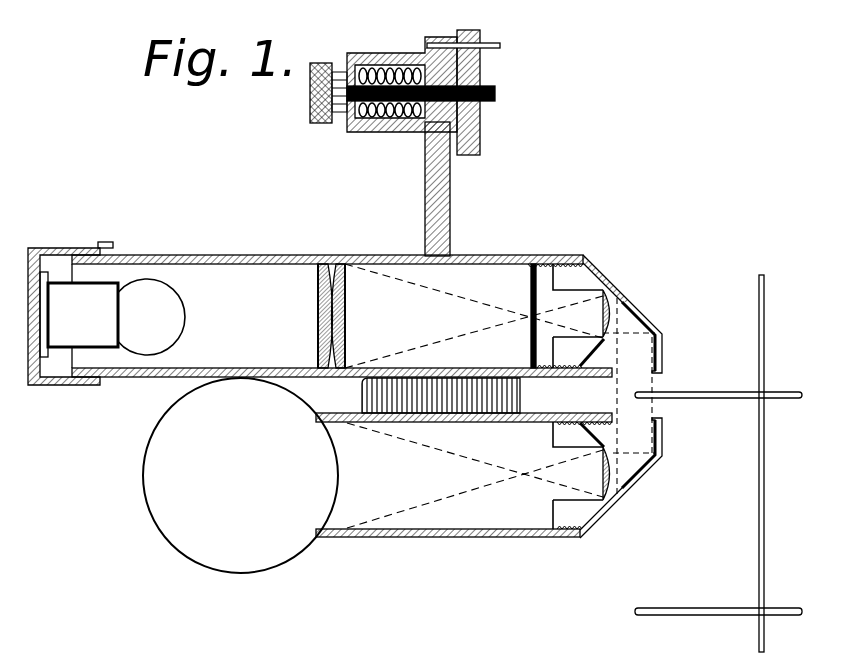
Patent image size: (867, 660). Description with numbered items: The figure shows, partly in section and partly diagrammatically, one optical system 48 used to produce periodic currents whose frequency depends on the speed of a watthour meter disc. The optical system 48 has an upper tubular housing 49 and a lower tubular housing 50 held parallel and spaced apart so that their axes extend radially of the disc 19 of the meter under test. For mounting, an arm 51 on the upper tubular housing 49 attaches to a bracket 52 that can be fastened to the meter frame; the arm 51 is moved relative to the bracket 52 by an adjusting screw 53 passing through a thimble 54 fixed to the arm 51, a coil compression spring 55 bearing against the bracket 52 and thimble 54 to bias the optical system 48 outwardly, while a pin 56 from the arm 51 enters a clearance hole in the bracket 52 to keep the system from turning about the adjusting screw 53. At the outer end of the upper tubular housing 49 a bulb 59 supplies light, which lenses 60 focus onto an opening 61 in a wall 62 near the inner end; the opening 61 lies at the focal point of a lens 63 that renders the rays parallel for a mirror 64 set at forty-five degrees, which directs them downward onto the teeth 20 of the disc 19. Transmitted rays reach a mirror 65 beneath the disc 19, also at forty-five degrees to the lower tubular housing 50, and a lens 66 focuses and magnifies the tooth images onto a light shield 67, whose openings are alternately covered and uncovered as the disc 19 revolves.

The disc 19 is at (720, 398).
The teeth 20 is at (648, 392).
The optical system 48 is at (533, 210).
The upper tubular housing 49 is at (456, 255).
The lower tubular housing 50 is at (410, 538).
The arm 51 is at (425, 178).
The bracket 52 is at (482, 145).
The adjusting screw 53 is at (495, 94).
The thimble 54 is at (402, 53).
The coil compression spring 55 is at (397, 132).
The pin 56 is at (499, 46).
The bulb 59 is at (140, 290).
The lenses 60 is at (338, 264).
The opening 61 is at (528, 318).
The wall 62 is at (532, 273).
The lens 63 is at (620, 298).
The mirror 64 is at (637, 323).
The mirror 65 is at (628, 477).
The lens 66 is at (599, 522).
The light shield 67 is at (340, 475).